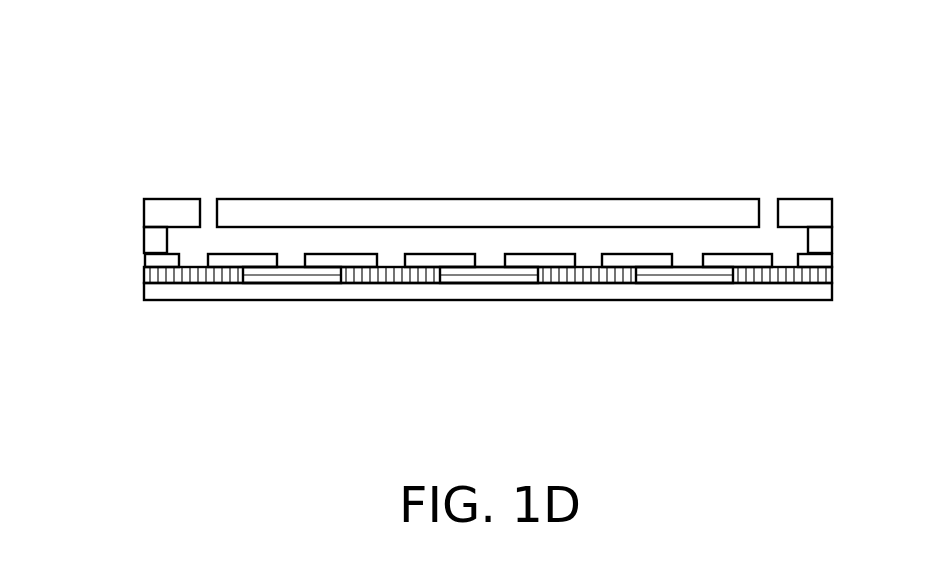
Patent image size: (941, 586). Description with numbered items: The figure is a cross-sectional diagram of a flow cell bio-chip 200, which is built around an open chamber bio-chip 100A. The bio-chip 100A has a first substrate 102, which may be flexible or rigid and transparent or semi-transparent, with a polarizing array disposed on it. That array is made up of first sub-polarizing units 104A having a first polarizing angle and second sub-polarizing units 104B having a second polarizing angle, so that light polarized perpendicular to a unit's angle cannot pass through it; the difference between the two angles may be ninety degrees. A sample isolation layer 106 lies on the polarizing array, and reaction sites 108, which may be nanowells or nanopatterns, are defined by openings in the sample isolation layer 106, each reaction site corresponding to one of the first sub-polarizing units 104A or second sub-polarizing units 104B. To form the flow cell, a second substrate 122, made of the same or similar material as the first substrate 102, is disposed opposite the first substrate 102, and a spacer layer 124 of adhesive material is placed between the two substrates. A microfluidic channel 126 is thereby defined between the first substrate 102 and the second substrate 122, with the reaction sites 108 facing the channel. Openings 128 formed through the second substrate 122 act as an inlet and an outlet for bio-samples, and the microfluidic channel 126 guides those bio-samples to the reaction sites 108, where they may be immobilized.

The bio-chip 200 is at (135, 35).
The bio-chip 100A is at (772, 320).
The first substrate 102 is at (144, 293).
The first sub-polarizing units 104A is at (408, 284).
The second sub-polarizing units 104B is at (294, 284).
The sample isolation layer 106 is at (144, 260).
The reaction sites 108 is at (686, 254).
The second substrate 122 is at (144, 213).
The spacer layer 124 is at (144, 243).
The microfluidic channel 126 is at (780, 242).
The openings 128 is at (207, 200).